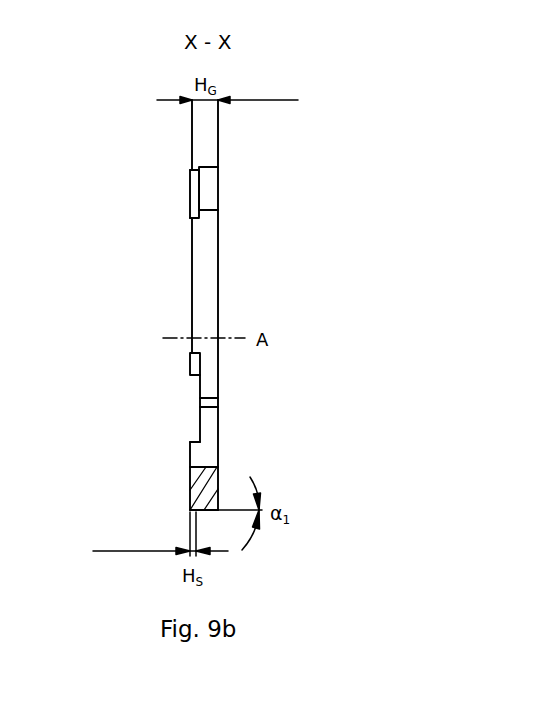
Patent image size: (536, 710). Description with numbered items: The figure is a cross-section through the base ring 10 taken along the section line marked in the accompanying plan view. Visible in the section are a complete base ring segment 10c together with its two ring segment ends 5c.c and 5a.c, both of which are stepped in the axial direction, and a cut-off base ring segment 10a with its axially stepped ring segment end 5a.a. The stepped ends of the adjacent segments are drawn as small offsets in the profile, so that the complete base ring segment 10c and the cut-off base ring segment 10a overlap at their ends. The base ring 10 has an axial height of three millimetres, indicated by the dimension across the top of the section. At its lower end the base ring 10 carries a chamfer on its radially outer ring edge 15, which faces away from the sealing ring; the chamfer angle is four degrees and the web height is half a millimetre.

The base ring 10 is at (278, 234).
The base ring segment 10c is at (189, 243).
The cut-off base ring segment 10a is at (190, 453).
The ring segment end 5c.c is at (192, 198).
The ring segment end 5a.c is at (195, 380).
The ring segment end 5a.a is at (198, 423).
The radially outer ring edge 15 is at (218, 510).